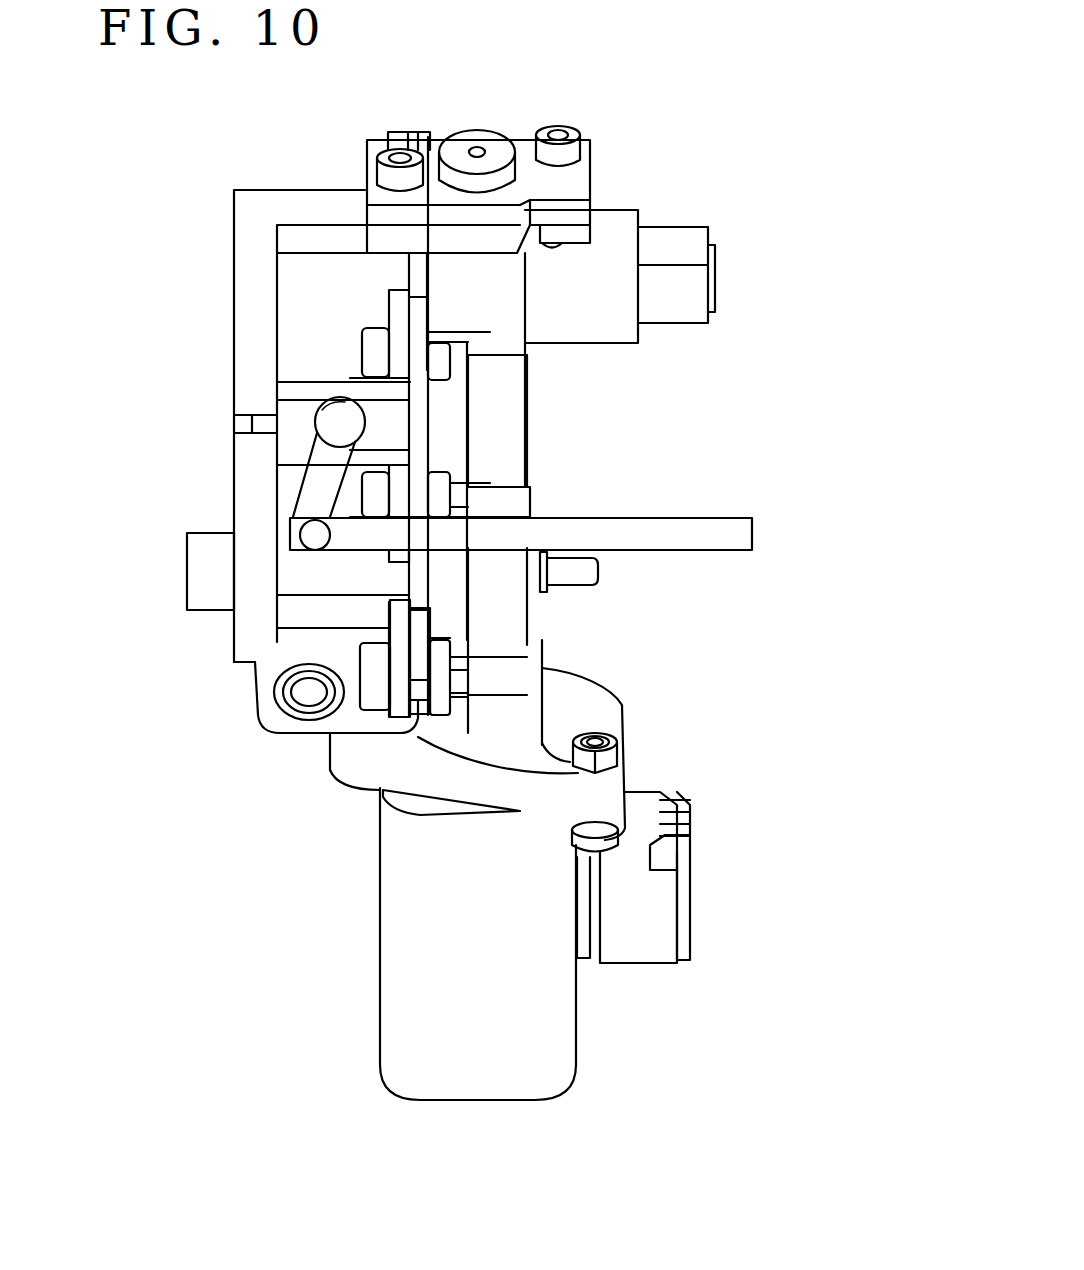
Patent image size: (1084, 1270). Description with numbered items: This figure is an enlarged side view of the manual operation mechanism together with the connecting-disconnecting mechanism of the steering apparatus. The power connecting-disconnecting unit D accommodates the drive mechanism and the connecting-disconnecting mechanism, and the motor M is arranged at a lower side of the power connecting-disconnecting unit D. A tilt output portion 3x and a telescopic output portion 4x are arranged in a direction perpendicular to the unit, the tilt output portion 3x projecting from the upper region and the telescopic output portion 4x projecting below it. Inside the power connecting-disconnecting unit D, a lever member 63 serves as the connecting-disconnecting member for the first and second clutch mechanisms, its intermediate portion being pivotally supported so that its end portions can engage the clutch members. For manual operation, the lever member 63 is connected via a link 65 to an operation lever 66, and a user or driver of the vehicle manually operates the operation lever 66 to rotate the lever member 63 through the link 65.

The tilt output portion 3x is at (715, 277).
The lever member 63 is at (330, 416).
The link 65 is at (315, 497).
The operation lever 66 is at (755, 530).
The telescopic output portion 4x is at (598, 572).
The power connecting-disconnecting unit D is at (556, 413).
The motor M is at (390, 935).